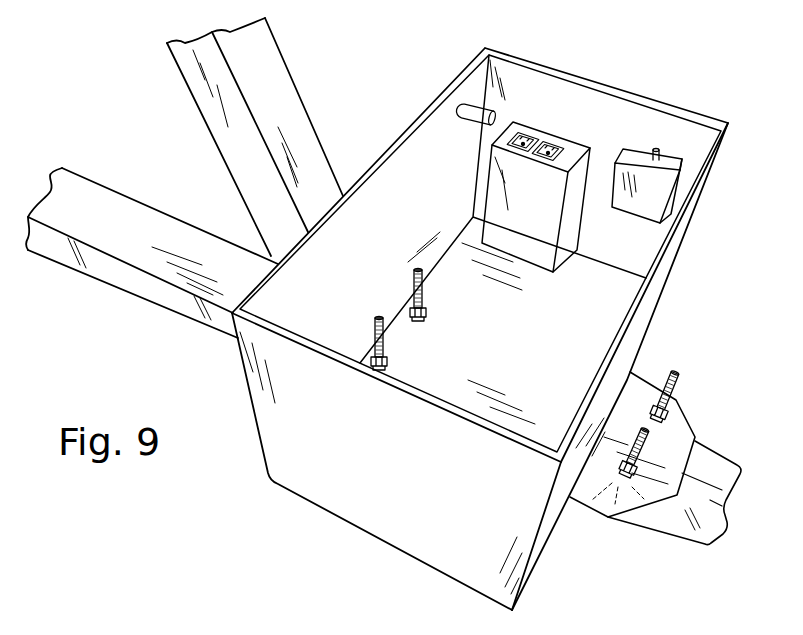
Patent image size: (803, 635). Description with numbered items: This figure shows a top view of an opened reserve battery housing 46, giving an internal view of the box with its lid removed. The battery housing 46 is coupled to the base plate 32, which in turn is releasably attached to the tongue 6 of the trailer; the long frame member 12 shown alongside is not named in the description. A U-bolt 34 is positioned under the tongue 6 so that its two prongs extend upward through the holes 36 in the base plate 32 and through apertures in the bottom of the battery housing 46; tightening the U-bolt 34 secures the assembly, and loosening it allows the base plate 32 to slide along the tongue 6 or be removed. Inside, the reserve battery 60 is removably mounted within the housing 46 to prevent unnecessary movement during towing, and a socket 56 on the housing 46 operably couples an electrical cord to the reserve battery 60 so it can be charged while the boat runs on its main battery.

The tongue 6 is at (684, 540).
The frame beam 12 is at (280, 82).
The base plate 32 is at (697, 420).
The U-bolt 34 is at (425, 296).
The holes 36 is at (648, 510).
The reserve battery housing 46 is at (331, 512).
The socket 56 is at (493, 116).
The reserve battery 60 is at (573, 147).